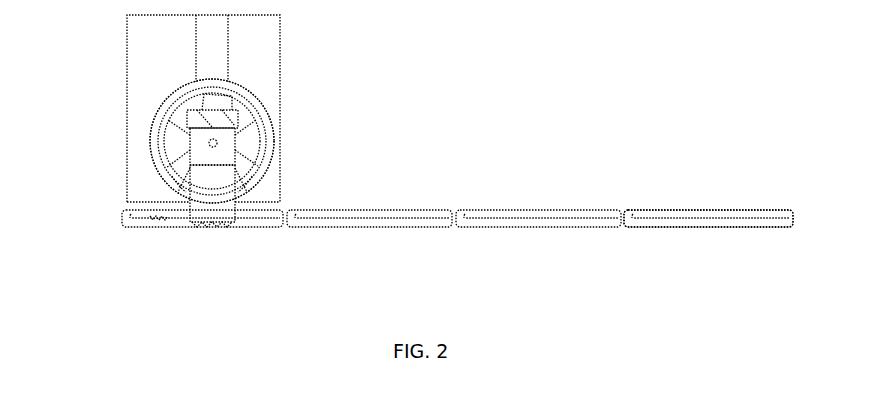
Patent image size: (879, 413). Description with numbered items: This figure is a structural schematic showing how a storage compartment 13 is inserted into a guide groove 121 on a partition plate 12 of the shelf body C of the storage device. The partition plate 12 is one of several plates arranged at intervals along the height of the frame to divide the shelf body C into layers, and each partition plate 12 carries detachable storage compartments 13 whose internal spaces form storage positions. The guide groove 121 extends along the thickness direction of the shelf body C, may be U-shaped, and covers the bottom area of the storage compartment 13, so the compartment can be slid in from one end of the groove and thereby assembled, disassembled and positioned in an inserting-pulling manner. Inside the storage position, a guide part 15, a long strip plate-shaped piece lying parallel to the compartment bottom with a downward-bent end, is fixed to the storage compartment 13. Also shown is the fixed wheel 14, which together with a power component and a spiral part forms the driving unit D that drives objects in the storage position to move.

The partition plate 12 is at (457, 225).
The guide groove 121 is at (733, 210).
The storage compartment 13 is at (137, 57).
The fixed wheel 14 is at (273, 120).
The guide part 15 is at (203, 222).
The driving unit D is at (283, 147).
The shelf body C is at (753, 228).